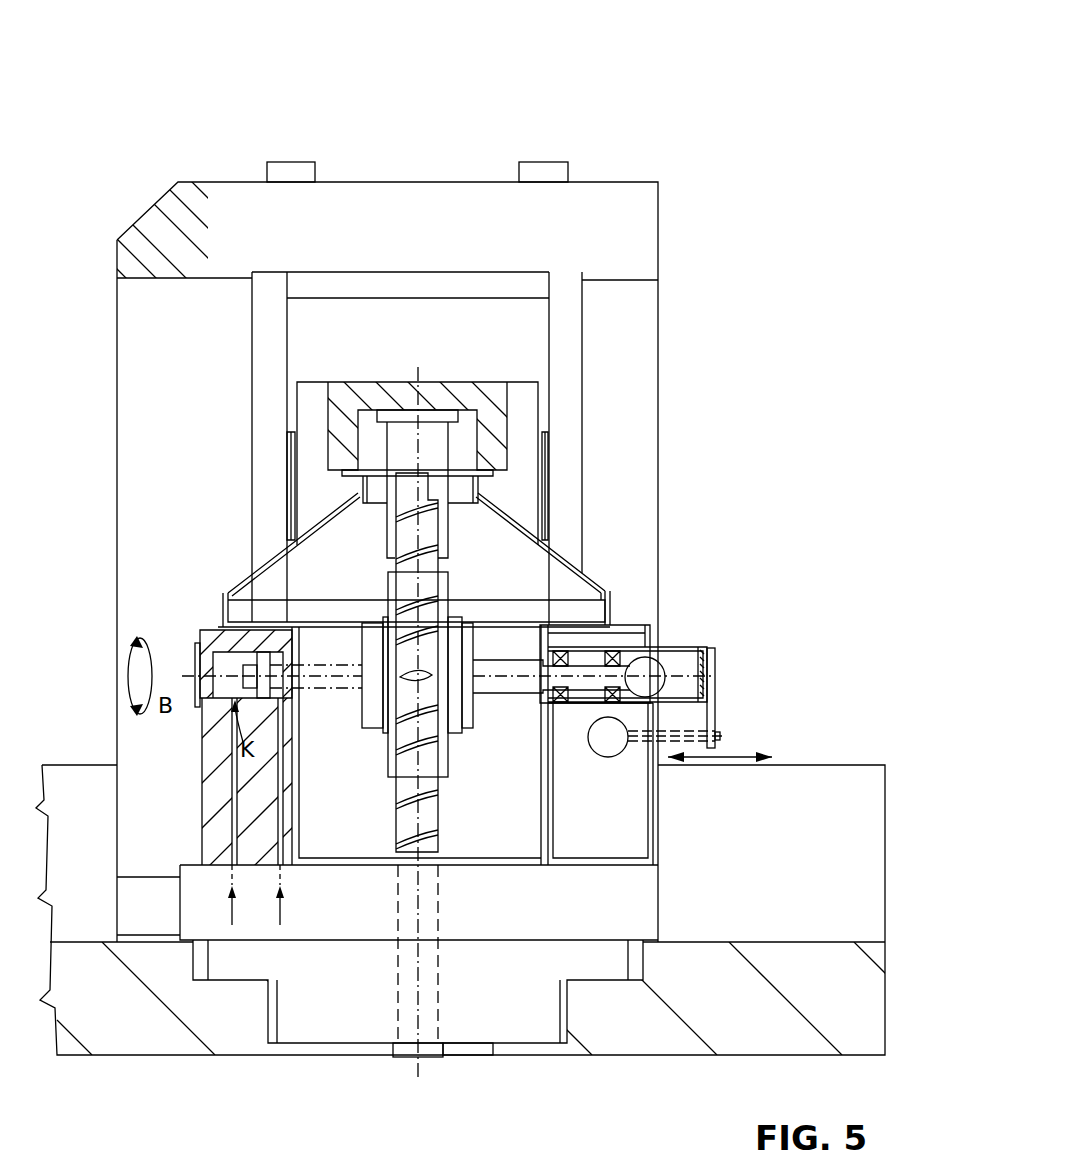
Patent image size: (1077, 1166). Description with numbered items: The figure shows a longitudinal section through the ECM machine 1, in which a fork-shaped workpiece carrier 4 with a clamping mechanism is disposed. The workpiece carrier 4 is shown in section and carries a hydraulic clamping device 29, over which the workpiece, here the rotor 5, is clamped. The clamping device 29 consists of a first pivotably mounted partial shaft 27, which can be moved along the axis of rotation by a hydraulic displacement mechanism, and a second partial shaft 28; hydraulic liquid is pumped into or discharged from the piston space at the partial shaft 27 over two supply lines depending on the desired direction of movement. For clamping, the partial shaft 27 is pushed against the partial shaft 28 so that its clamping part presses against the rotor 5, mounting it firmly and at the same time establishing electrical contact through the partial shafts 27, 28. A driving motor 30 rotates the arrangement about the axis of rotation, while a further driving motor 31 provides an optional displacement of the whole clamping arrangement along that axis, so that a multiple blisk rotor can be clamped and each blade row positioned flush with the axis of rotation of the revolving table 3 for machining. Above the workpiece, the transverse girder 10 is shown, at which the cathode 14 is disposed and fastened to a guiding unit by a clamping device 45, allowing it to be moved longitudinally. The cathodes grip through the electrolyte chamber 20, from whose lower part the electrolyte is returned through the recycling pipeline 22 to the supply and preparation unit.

The ECM machine 1 is at (705, 93).
The revolving table 3 is at (465, 1022).
The workpiece carrier 4 is at (252, 775).
The rotor 5 is at (405, 655).
The transverse girder 10 is at (432, 392).
The cathode 14 is at (407, 425).
The electrolyte chamber 20 is at (565, 557).
The recycling pipeline 22 is at (405, 1013).
The first partial shaft 27 is at (325, 683).
The second partial shaft 28 is at (505, 690).
The hydraulic clamping device 29 is at (208, 612).
The driving motor 30 is at (665, 668).
The driving motor 31 is at (607, 757).
The clamping device 45 is at (445, 415).